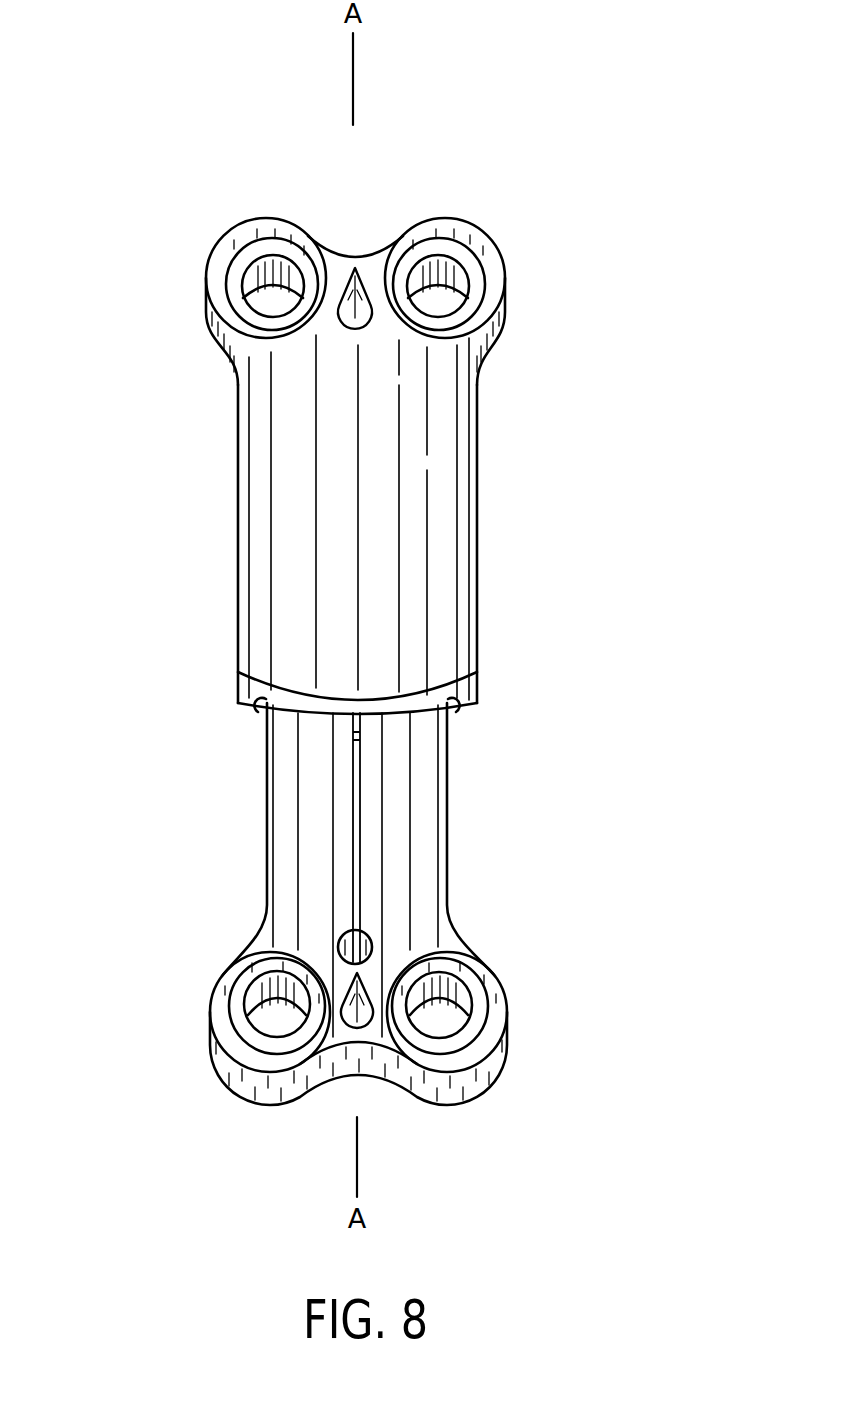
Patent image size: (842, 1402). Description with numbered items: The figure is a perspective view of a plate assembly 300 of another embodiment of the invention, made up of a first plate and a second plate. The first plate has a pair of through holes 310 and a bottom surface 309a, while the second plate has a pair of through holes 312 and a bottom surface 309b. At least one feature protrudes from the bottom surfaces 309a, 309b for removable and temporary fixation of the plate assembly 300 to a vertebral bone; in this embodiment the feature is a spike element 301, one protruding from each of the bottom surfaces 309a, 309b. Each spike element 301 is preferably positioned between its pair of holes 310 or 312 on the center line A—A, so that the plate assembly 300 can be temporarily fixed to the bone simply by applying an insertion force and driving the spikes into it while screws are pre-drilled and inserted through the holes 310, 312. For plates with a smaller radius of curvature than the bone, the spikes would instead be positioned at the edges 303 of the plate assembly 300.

The plate assembly 300 is at (503, 635).
The spike element 301 is at (347, 280).
The edges 303 is at (208, 262).
The bottom surface 309a is at (430, 877).
The bottom surface 309b is at (440, 420).
The through holes 310 is at (282, 987).
The through holes 312 is at (263, 267).